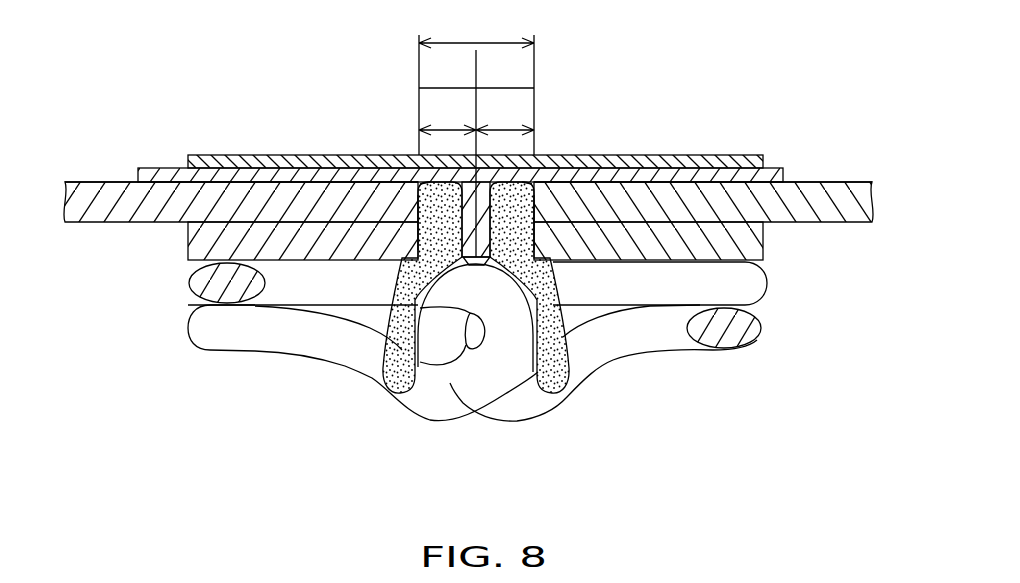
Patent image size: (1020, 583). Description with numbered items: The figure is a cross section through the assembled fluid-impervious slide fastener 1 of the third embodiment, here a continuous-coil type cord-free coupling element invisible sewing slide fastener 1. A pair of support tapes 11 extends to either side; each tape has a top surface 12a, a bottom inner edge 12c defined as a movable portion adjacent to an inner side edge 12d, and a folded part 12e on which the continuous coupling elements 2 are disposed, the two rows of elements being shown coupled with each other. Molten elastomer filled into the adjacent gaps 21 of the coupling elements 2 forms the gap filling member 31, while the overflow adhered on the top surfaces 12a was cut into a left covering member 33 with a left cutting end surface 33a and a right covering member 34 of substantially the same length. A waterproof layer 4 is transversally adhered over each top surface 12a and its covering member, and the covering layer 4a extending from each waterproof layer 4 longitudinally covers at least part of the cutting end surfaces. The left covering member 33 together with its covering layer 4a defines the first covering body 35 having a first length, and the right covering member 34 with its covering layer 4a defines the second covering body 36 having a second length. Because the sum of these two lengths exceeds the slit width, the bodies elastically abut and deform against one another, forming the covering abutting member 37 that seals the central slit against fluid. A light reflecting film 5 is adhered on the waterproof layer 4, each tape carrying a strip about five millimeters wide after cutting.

The slide fastener 1 is at (192, 101).
The continuous coupling elements 2 is at (250, 328).
The waterproof layer 4 is at (235, 155).
The covering layer 4a is at (467, 200).
The light reflecting film 5 is at (300, 168).
The support tapes 11 is at (113, 180).
The top surface 12a is at (97, 181).
The bottom inner edge 12c is at (392, 370).
The inner side edge 12d is at (370, 261).
The folded part 12e is at (290, 262).
The adjacent gaps 21 is at (450, 383).
The gap filling member 31 is at (385, 392).
The left covering member 33 is at (413, 208).
The left cutting end surface 33a is at (425, 186).
The right covering member 34 is at (553, 203).
The first covering body 35 is at (447, 95).
The second covering body 36 is at (505, 95).
The covering abutting member 37 is at (476, 80).